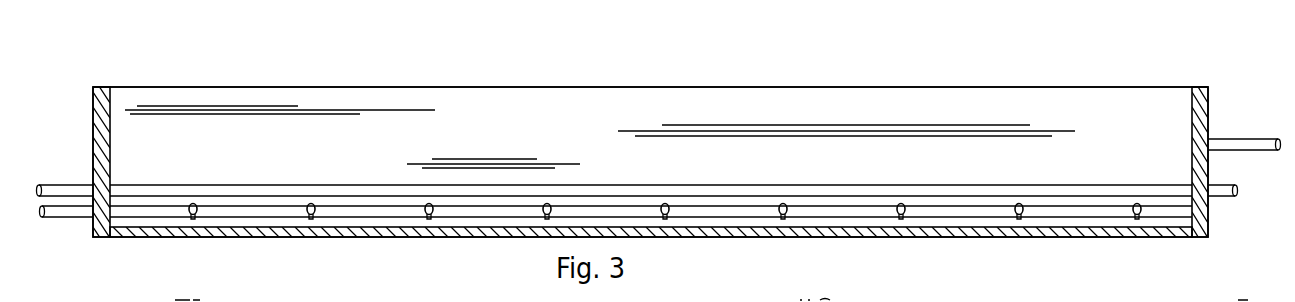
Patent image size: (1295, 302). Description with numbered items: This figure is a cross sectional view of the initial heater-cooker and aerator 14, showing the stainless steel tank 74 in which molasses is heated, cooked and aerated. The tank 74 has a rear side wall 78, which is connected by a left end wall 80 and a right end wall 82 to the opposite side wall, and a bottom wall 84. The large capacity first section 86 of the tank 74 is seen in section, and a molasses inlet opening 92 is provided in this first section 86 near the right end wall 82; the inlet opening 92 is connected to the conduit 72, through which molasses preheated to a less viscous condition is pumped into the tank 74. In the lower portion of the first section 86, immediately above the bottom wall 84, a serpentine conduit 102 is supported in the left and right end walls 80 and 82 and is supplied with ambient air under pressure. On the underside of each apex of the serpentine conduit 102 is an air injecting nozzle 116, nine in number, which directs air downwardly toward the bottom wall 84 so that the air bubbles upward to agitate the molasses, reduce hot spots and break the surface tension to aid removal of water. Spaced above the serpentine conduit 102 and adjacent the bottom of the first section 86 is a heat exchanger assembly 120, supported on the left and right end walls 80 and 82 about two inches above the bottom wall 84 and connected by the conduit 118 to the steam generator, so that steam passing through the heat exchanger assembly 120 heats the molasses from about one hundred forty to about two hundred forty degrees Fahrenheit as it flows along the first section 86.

The initial heater-cooker and aerator 14 is at (826, 247).
The conduit 72 is at (1222, 137).
The tank 74 is at (573, 86).
The rear side wall 78 is at (370, 87).
The left end wall 80 is at (93, 103).
The right end wall 82 is at (1210, 107).
The bottom wall 84 is at (477, 238).
The first section 86 is at (733, 113).
The molasses inlet opening 92 is at (1205, 160).
The serpentine conduit 102 is at (287, 219).
The air injecting nozzle 116 is at (194, 219).
The conduit 118 is at (78, 184).
The heat exchanger assembly 120 is at (265, 184).